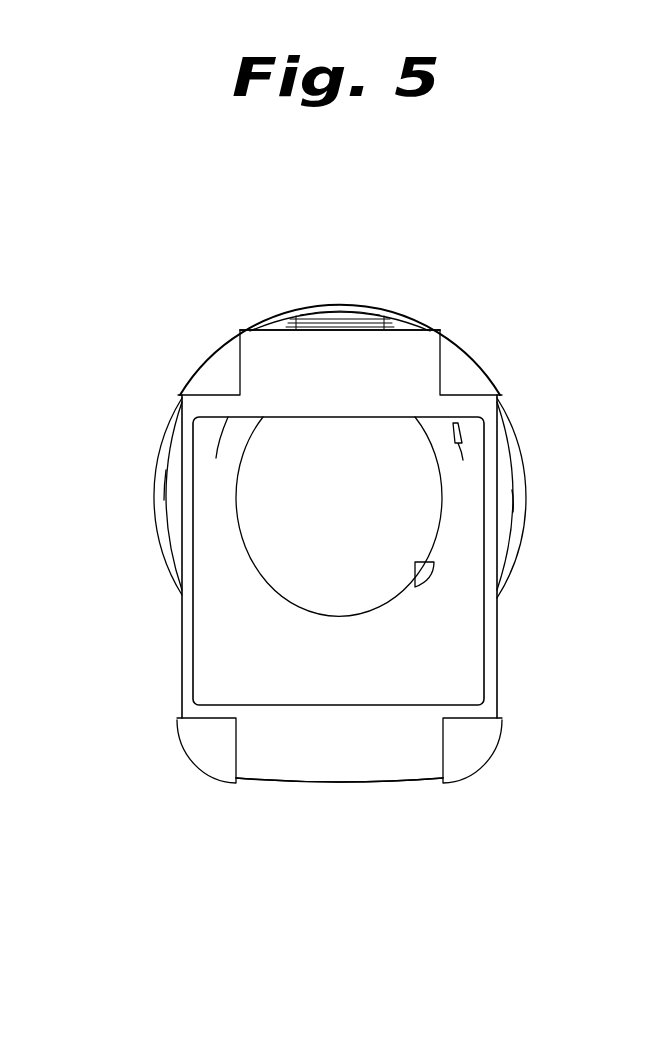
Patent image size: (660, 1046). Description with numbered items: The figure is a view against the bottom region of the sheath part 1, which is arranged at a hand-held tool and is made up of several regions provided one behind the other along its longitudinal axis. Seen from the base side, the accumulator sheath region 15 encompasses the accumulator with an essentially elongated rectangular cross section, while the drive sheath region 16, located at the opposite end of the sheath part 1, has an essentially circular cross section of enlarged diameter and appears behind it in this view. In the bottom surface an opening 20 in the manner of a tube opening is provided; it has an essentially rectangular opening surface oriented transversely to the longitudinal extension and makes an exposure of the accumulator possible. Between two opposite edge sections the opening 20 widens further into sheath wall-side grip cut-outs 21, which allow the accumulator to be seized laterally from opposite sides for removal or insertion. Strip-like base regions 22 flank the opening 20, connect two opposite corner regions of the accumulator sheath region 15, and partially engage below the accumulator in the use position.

The sheath part 1 is at (483, 298).
The accumulator sheath region 15 is at (498, 583).
The drive sheath region 16 is at (525, 472).
The opening 20 is at (233, 597).
The grip cut-outs 21 is at (187, 512).
The base regions 22 is at (392, 372).